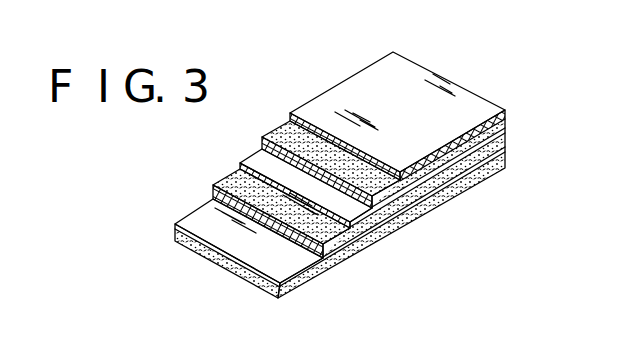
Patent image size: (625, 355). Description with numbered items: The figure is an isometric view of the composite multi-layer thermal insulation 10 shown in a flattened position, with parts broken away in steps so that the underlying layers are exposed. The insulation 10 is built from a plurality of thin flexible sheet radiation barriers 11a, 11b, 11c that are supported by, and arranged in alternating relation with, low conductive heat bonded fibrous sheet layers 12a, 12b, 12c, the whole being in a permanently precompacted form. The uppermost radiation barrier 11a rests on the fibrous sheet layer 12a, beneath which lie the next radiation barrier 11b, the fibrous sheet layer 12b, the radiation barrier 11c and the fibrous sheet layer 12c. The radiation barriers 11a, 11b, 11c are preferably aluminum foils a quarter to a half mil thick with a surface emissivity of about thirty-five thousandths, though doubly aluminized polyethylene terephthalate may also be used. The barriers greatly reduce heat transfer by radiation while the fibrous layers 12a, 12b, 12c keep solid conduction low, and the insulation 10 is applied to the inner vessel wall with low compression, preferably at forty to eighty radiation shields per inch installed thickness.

The multi-layer thermal insulation 10 is at (410, 226).
The radiation barrier 11a is at (388, 72).
The radiation barrier 11b is at (253, 165).
The radiation barrier 11c is at (205, 211).
The heat bonded fibrous sheet layer 12a is at (279, 134).
The heat bonded fibrous sheet layer 12b is at (221, 181).
The heat bonded fibrous sheet layer 12c is at (212, 240).